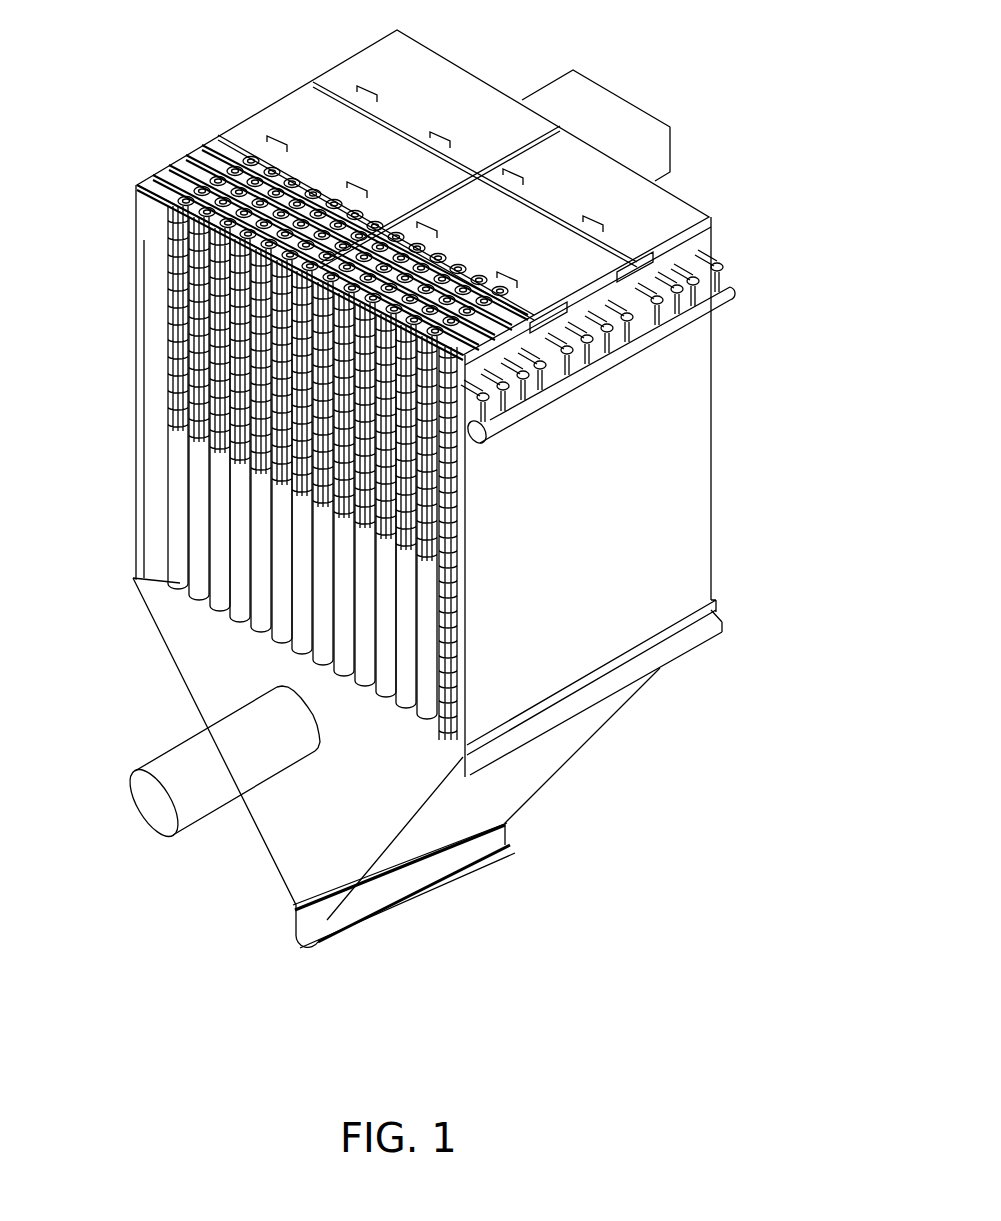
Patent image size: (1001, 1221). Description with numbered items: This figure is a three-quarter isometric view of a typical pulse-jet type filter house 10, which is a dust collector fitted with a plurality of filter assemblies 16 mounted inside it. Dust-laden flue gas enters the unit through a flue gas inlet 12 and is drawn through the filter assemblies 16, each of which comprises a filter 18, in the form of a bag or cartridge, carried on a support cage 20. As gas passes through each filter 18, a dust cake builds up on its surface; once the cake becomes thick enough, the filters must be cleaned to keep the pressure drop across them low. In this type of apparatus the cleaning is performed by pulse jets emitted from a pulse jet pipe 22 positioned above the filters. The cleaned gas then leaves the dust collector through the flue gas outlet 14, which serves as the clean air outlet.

The pulse-jet type filter house 10 is at (462, 489).
The flue gas inlet 12 is at (192, 820).
The flue gas outlet 14 is at (630, 117).
The filter assemblies 16 is at (150, 478).
The filter 18 is at (133, 553).
The support cage 20 is at (150, 327).
The pulse jet pipe 22 is at (165, 193).